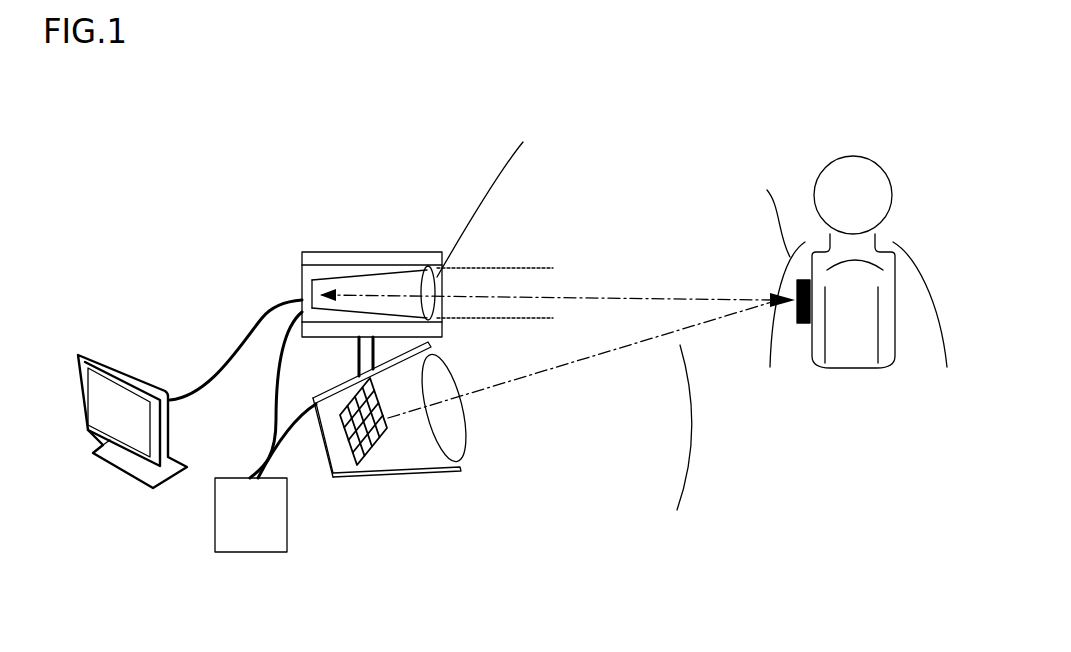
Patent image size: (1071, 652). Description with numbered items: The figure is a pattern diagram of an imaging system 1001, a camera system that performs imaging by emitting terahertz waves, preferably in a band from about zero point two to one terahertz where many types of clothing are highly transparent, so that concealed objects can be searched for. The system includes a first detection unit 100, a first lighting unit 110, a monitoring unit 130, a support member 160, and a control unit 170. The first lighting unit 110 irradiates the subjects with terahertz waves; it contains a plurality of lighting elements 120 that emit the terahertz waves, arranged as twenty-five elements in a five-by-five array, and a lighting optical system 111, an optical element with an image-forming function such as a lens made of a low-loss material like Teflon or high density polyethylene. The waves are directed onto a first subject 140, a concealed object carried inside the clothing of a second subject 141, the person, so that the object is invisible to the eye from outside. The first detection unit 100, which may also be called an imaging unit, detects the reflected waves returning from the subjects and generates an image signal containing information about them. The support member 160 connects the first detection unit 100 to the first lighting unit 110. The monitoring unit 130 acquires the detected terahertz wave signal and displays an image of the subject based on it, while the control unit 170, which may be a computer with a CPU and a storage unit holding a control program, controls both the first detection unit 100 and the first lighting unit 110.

The imaging system 1001 is at (259, 156).
The first detection unit 100 is at (300, 258).
The first lighting unit 110 is at (445, 473).
The lighting optical system 111 is at (452, 423).
The lighting elements 120 is at (363, 465).
The monitoring unit 130 is at (90, 352).
The first subject 140 is at (805, 327).
The second subject 141 is at (850, 357).
The support member 160 is at (358, 358).
The control unit 170 is at (223, 553).